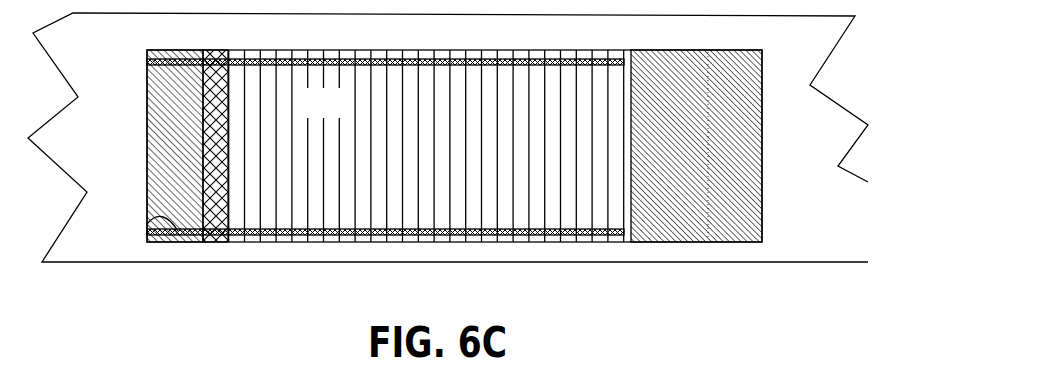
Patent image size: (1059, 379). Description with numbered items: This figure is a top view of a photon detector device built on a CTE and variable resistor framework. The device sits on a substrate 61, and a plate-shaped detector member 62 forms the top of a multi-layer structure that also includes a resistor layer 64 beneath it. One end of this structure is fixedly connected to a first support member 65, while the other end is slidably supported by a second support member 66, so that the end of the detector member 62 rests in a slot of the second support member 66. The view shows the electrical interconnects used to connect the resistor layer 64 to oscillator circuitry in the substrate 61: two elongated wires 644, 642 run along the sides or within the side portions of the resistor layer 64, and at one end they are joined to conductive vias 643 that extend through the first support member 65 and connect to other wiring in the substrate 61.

The substrate 61 is at (108, 262).
The plate-shaped detector member 62 is at (426, 146).
The resistor layer 64 is at (622, 103).
The first support member 65 is at (147, 163).
The second support member 66 is at (762, 72).
The elongated wire 642 is at (316, 231).
The conductive via 643 is at (173, 66).
The elongated wire 644 is at (318, 58).